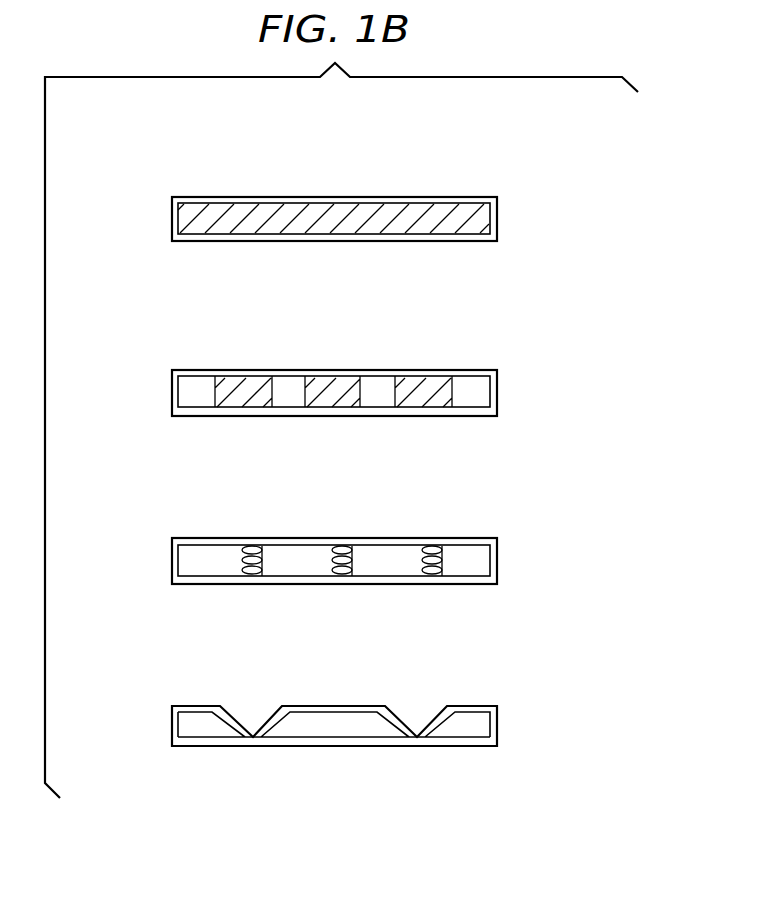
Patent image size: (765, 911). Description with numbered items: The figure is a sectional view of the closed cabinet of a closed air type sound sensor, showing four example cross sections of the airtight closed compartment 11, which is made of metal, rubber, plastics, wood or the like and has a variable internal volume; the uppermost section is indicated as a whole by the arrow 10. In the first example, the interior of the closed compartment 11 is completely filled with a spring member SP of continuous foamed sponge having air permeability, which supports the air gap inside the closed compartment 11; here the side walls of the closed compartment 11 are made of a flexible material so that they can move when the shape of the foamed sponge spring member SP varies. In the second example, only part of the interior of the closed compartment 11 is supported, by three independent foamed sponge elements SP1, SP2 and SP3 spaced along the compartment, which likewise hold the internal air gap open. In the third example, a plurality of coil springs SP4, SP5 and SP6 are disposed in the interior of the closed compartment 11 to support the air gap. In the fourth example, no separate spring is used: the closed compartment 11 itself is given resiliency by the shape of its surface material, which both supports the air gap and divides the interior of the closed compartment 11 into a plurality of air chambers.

The stiffness/thermal expansion control structure 10 is at (333, 178).
The closed compartment 11 is at (478, 197).
The spring member SP is at (236, 210).
The independent foamed sponge element SP1 is at (232, 377).
The independent foamed sponge element SP2 is at (323, 377).
The independent foamed sponge element SP3 is at (413, 377).
The spring SP4 is at (245, 545).
The spring SP5 is at (336, 545).
The spring SP6 is at (426, 545).